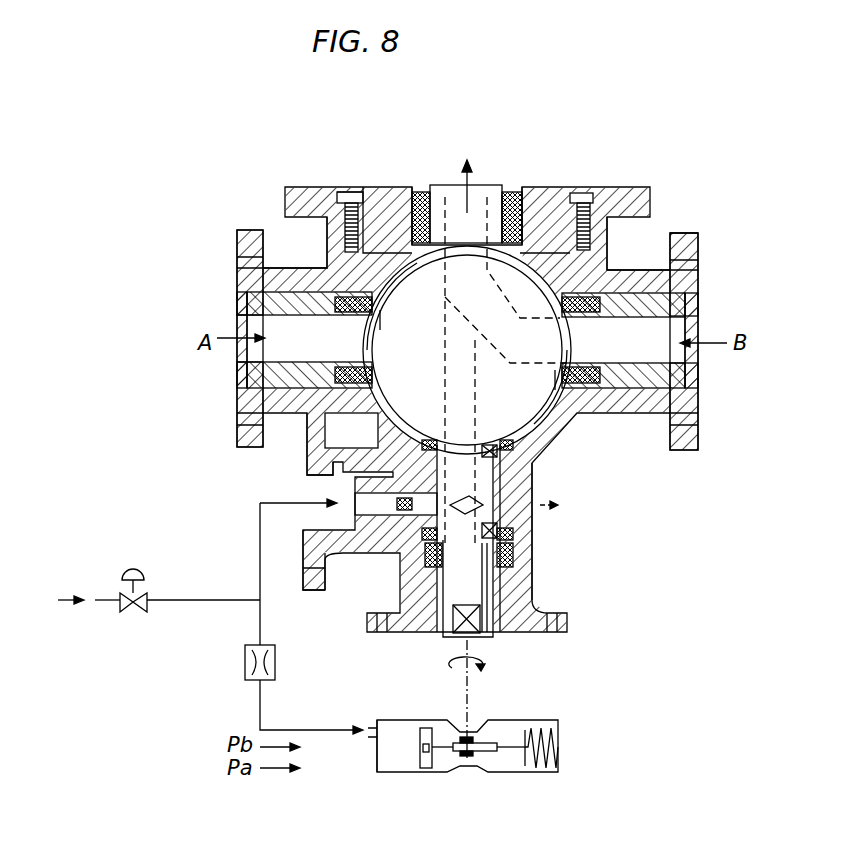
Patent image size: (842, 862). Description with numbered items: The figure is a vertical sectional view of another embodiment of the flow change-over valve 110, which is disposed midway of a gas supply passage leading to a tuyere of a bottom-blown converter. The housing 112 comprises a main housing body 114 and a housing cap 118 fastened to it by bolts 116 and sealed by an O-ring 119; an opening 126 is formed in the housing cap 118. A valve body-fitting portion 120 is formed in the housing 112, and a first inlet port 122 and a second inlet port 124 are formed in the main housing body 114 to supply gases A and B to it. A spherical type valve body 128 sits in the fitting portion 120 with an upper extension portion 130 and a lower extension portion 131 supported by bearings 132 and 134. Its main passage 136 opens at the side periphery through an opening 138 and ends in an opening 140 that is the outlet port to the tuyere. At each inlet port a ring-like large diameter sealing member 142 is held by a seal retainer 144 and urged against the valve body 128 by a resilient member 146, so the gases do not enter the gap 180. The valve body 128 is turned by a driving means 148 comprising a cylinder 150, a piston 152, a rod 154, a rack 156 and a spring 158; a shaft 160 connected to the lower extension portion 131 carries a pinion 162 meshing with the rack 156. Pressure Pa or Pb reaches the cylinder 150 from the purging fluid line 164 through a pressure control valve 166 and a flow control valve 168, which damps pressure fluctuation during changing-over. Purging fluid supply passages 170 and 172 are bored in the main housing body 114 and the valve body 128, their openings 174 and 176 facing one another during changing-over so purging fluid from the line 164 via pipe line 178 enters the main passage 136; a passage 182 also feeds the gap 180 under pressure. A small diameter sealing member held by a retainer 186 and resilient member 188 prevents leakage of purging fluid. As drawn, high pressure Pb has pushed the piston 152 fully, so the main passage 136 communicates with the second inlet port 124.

The flow change-over valve 110 is at (152, 251).
The housing 112 is at (216, 240).
The main housing body 114 is at (237, 274).
The bolts 116 is at (341, 189).
The housing cap 118 is at (373, 185).
The O-ring 119 is at (343, 269).
The valve body-fitting portion 120 is at (393, 266).
The first inlet port 122 is at (237, 363).
The second inlet port 124 is at (693, 353).
The opening 126 is at (423, 192).
The spherical type valve body 128 is at (373, 341).
The upper extension portion 130 is at (440, 197).
The lower extension portion 131 is at (470, 592).
The bearing 132 is at (397, 185).
The bearing 134 is at (513, 558).
The main passage 136 is at (455, 302).
The opening 138 is at (547, 343).
The opening 140 is at (482, 190).
The ring-like large diameter sealing member 142 is at (608, 252).
The seal retainer 144 is at (692, 307).
The resilient member 146 is at (590, 320).
The driving means 148 is at (570, 753).
The cylinder 150 is at (377, 762).
The piston 152 is at (420, 765).
The rod 154 is at (447, 753).
The rack 156 is at (490, 757).
The spring 158 is at (548, 768).
The shaft 160 is at (467, 694).
The pinion 162 is at (467, 758).
The line 164 is at (108, 602).
The pressure control valve 166 is at (133, 567).
The flow control valve 168 is at (245, 663).
The supply passage 170 is at (337, 497).
The supply passage 172 is at (472, 393).
The opening 174 is at (433, 503).
The opening 176 is at (482, 497).
The pipe line 178 is at (260, 543).
The gap 180 is at (390, 398).
The passage 182 is at (330, 467).
The retainer 186 is at (383, 546).
The resilient member 188 is at (398, 553).